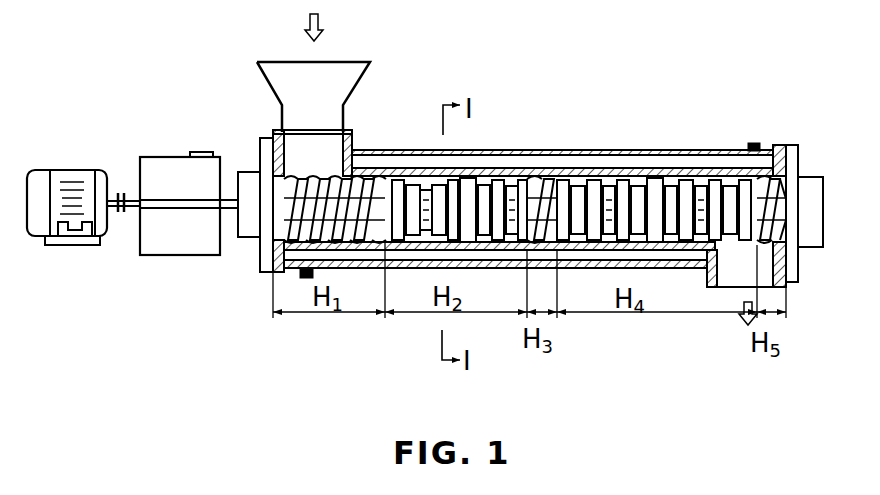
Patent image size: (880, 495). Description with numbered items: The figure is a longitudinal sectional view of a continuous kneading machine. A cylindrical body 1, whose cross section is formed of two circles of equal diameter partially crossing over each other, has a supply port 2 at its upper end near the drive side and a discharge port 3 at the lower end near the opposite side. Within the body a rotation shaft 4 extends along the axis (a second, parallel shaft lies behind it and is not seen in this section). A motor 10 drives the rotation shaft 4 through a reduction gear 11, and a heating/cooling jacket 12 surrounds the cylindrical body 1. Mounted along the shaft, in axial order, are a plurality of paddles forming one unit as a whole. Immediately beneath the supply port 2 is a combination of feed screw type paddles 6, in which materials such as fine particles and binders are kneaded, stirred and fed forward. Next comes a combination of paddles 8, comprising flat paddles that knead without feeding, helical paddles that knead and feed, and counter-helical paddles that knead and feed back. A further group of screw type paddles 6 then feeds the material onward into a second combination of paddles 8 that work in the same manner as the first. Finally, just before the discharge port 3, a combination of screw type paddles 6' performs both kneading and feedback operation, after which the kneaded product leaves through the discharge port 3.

The cylindrical body 1 is at (518, 152).
The supply port 2 is at (358, 90).
The discharge port 3 is at (710, 285).
The rotation shaft 4 is at (231, 180).
The feed screw type paddle 6 is at (464, 147).
The screw type paddle for feedback operation 6' is at (792, 154).
The paddle 8 is at (447, 190).
The motor 10 is at (72, 245).
The reduction gear 11 is at (180, 255).
The heating/cooling jacket 12 is at (672, 163).